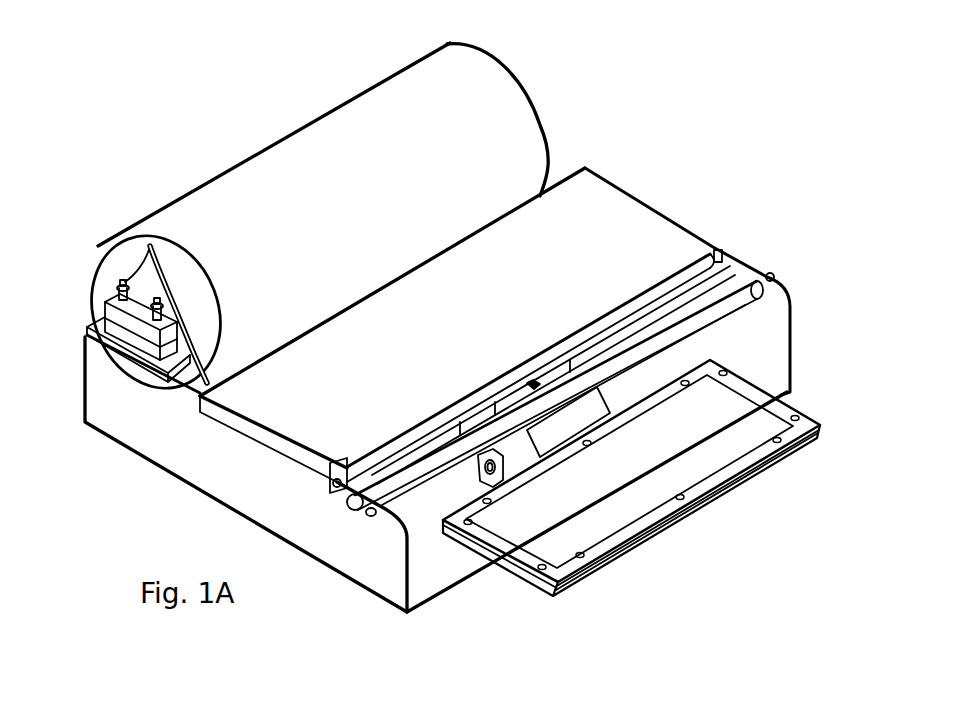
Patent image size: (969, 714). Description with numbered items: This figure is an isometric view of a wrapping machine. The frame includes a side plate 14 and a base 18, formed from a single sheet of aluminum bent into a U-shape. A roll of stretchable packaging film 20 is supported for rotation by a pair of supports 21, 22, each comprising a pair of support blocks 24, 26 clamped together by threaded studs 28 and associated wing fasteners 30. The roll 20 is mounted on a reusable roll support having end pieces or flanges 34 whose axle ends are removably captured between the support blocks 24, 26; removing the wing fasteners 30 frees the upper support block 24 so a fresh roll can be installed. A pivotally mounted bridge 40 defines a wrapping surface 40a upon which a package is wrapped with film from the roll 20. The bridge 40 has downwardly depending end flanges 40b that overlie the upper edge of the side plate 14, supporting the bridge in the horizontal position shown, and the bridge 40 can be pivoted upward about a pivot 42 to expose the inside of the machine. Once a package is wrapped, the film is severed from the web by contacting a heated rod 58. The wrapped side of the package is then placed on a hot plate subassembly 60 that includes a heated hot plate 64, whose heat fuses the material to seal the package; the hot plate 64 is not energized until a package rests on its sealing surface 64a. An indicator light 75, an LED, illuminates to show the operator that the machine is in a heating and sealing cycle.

The side plate 14 is at (236, 471).
The base 18 is at (431, 571).
The roll of stretchable packaging film 20 is at (364, 205).
The support 21 is at (177, 276).
The support 22 is at (567, 96).
The upper support block 24 is at (112, 312).
The support block 26 is at (118, 338).
The threaded stud 28 is at (157, 298).
The wing fastener 30 is at (97, 264).
The end piece 34 is at (212, 388).
The bridge 40 is at (636, 186).
The wrapping surface 40a is at (456, 348).
The end flange 40b is at (200, 399).
The pivot 42 is at (329, 484).
The heated rod 58 is at (425, 484).
The hot plate subassembly 60 is at (598, 574).
The hot plate 64 is at (665, 478).
The sealing surface 64a is at (624, 496).
The indicator light 75 is at (533, 384).